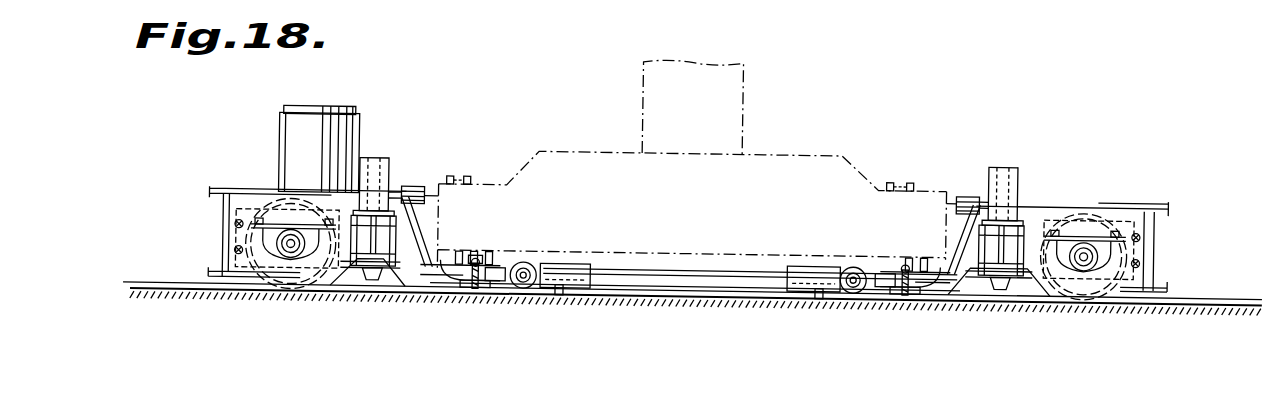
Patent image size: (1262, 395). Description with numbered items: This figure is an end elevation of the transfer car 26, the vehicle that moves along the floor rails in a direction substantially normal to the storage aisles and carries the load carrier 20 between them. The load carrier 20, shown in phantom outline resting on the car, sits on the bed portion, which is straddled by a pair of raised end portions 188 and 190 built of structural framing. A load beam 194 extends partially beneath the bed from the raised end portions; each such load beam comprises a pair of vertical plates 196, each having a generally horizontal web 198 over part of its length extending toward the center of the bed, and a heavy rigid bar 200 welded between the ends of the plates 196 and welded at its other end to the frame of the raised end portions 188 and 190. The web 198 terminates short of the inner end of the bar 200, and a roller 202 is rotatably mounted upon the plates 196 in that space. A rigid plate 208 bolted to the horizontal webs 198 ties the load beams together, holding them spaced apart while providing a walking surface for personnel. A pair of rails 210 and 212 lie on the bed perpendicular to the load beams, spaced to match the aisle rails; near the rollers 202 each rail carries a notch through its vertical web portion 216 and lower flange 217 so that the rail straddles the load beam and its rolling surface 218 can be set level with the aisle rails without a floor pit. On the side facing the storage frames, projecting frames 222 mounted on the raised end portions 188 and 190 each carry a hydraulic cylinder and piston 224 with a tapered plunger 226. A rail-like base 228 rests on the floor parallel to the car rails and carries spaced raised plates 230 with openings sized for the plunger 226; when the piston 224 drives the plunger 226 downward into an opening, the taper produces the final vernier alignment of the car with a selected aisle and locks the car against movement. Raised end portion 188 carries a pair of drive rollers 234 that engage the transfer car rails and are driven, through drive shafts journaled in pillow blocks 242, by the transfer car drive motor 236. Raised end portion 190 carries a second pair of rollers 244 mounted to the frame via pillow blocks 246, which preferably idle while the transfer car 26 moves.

The load carrier 20 is at (602, 138).
The transfer car 26 is at (1167, 193).
The raised end portion 188 is at (220, 185).
The raised end portion 190 is at (1063, 195).
The load beam 194 is at (432, 258).
The vertical plates 196 is at (568, 280).
The horizontal web 198 is at (565, 272).
The rigid bar 200 is at (437, 282).
The roller 202 is at (522, 256).
The rigid plate 208 is at (720, 262).
The rail 210 is at (880, 282).
The rail 212 is at (490, 278).
The vertical web portion 216 is at (455, 262).
The lower flange 217 is at (470, 282).
The rolling surface 218 is at (480, 258).
The projecting frames 222 is at (384, 186).
The hydraulic cylinder and piston 224 is at (372, 154).
The tapered plunger 226 is at (440, 275).
The rail-like base 228 is at (376, 278).
The raised plates 230 is at (352, 270).
The drive rollers 234 is at (292, 285).
The transfer car drive motor 236 is at (284, 127).
The pillow blocks 242 is at (262, 268).
The rollers 244 is at (1093, 285).
The pillow blocks 246 is at (1102, 262).